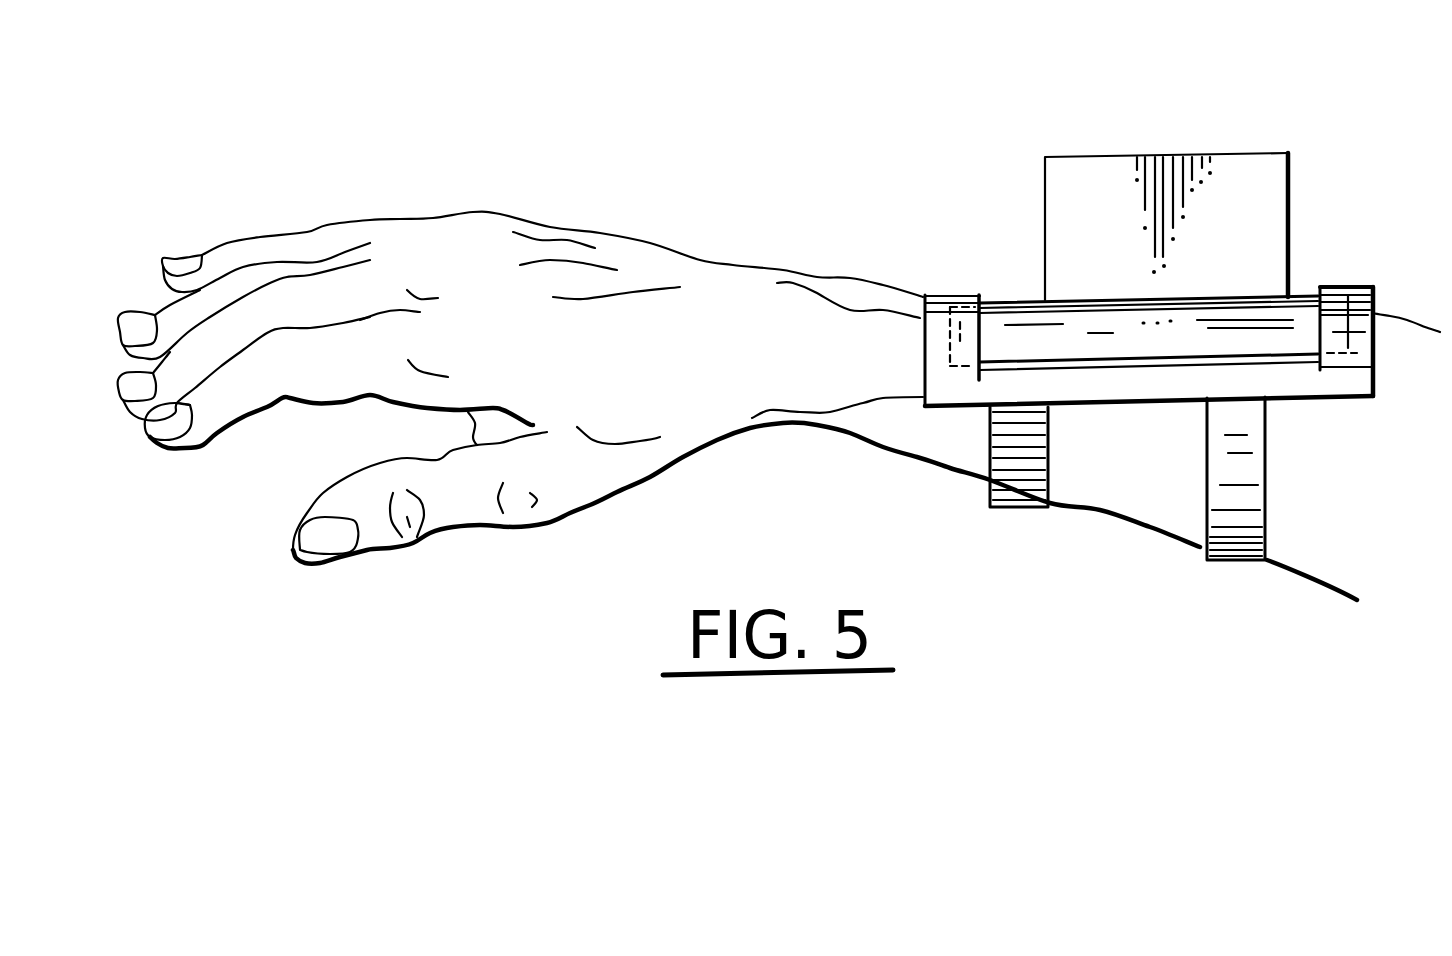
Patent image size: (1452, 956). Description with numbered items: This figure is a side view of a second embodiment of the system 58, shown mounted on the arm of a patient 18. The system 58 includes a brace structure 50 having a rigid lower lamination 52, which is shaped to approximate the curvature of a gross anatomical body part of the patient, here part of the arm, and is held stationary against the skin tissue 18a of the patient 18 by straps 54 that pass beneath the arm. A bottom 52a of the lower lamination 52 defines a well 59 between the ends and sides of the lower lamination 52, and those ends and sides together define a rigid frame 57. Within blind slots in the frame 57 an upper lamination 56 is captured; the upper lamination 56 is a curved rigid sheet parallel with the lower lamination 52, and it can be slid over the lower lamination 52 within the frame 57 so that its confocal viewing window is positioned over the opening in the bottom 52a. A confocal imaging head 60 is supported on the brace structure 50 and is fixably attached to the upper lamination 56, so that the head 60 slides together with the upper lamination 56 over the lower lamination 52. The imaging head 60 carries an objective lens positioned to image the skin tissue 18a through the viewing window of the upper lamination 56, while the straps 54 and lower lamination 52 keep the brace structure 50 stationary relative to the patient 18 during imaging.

The patient 18 is at (805, 427).
The skin tissue 18a is at (1398, 313).
The brace structure 50 is at (1133, 403).
The lower lamination 52 is at (1325, 400).
The bottom 52a is at (1373, 363).
The straps 54 is at (1027, 510).
The upper lamination 56 is at (968, 342).
The rigid frame 57 is at (1176, 385).
The system 58 is at (1196, 113).
The well 59 is at (1310, 303).
The confocal imaging head 60 is at (1045, 212).